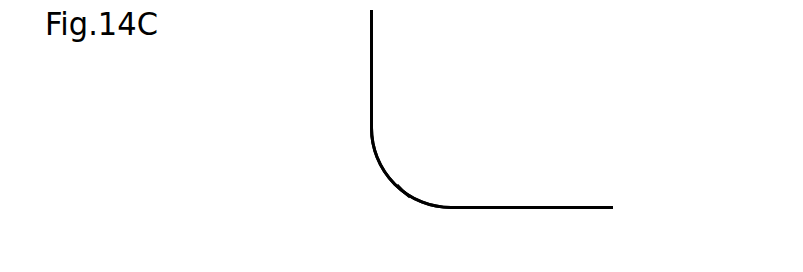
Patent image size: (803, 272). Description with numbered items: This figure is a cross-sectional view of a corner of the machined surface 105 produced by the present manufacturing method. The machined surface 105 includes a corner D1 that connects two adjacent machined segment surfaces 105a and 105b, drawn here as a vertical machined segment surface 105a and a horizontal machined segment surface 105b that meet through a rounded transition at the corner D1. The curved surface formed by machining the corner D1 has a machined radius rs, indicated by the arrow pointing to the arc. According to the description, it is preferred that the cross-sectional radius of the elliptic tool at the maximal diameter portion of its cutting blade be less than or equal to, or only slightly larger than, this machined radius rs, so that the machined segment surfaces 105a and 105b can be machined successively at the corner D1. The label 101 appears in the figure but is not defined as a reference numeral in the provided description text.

The housing 101 is at (368, 52).
The machined surface 105 is at (374, 42).
The machined segment surface 105a is at (371, 86).
The machined segment surface 105b is at (511, 208).
The machined radius rs is at (396, 184).
The corner D1 is at (403, 194).